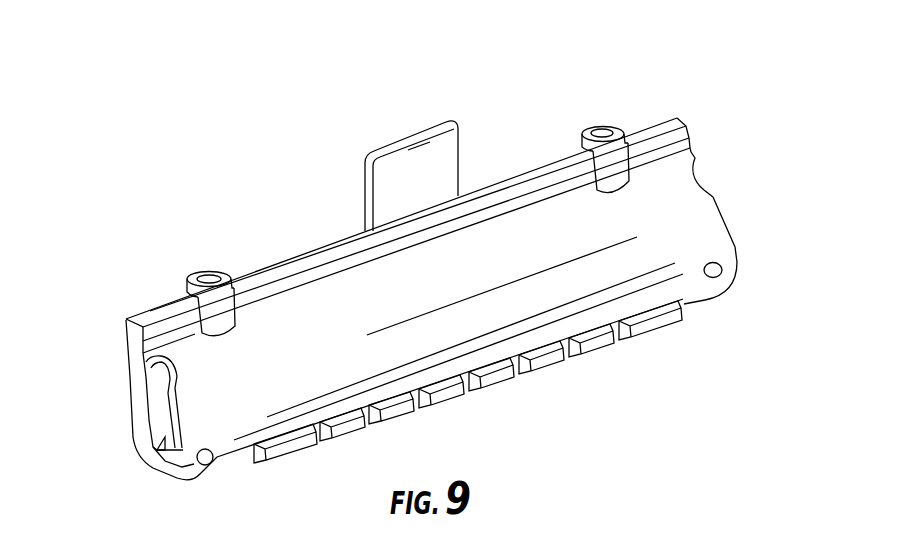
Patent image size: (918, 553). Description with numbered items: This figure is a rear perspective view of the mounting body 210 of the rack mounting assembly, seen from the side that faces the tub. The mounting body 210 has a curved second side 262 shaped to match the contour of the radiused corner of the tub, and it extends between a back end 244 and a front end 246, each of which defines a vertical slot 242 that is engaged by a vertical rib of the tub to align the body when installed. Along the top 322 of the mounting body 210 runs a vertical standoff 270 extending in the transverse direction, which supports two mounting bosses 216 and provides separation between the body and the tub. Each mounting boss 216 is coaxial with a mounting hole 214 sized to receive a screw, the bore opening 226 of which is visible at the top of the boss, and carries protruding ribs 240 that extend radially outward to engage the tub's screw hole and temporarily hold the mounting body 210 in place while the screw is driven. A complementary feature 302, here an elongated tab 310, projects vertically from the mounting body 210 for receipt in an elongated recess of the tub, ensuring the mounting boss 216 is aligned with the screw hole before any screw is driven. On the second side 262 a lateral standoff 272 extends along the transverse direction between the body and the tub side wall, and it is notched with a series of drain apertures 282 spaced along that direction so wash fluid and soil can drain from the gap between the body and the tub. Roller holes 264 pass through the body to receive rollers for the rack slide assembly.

The mounting body 210 is at (126, 170).
The mounting hole 214 is at (206, 269).
The mounting boss 216 is at (229, 301).
The pin bore 226 is at (217, 268).
The protruding ribs 240 is at (186, 300).
The vertical slot 242 is at (164, 389).
The back end 244 is at (738, 242).
The front end 246 is at (139, 390).
The second side 262 is at (478, 275).
The roller holes 264 is at (213, 461).
The vertical standoff 270 is at (140, 316).
The lateral standoff 272 is at (352, 436).
The drain apertures 282 is at (620, 342).
The complementary feature 302 is at (418, 125).
The elongated tab 310 is at (397, 180).
The top 322 is at (331, 240).